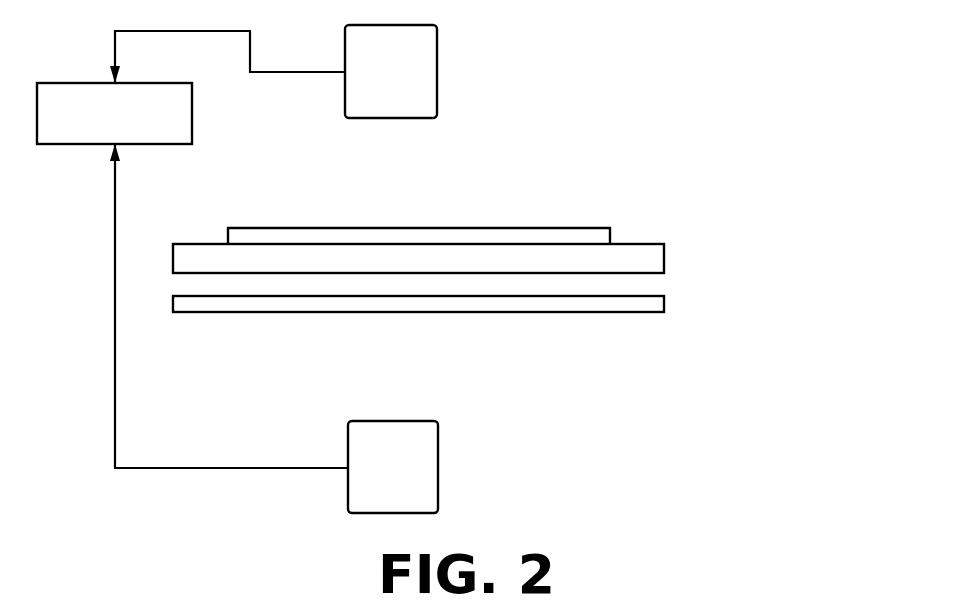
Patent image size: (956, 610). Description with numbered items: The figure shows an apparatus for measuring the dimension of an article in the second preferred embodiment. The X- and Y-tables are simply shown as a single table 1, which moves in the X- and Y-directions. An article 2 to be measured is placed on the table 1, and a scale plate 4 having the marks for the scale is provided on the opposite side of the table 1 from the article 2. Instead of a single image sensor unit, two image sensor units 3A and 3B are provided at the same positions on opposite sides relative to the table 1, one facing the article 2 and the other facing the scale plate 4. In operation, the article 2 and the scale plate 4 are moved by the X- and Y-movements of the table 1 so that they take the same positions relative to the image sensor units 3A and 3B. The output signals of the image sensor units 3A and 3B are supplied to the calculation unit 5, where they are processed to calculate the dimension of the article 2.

The table 1 is at (653, 257).
The article 2 is at (592, 228).
The image sensor unit 3A is at (437, 70).
The image sensor unit 3B is at (438, 466).
The scale plate 4 is at (588, 312).
The calculation unit 5 is at (75, 145).